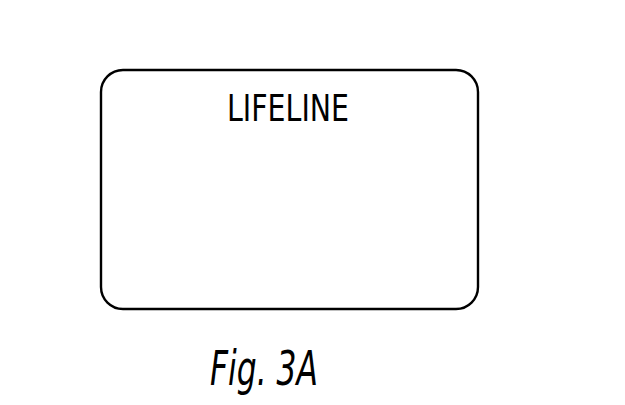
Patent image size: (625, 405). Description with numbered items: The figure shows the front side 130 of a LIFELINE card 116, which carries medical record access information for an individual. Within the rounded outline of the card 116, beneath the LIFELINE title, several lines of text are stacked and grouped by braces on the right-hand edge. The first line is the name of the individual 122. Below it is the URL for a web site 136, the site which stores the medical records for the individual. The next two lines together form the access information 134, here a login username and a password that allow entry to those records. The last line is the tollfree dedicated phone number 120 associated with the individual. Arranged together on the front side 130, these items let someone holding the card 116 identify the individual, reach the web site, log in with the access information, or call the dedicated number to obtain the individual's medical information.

The LIFELINE card 116 is at (276, 170).
The front side 130 is at (123, 106).
The name of the individual 122 is at (446, 142).
The URL for a web site 136 is at (446, 176).
The access information 134 is at (446, 213).
The tollfree dedicated phone number 120 is at (446, 270).